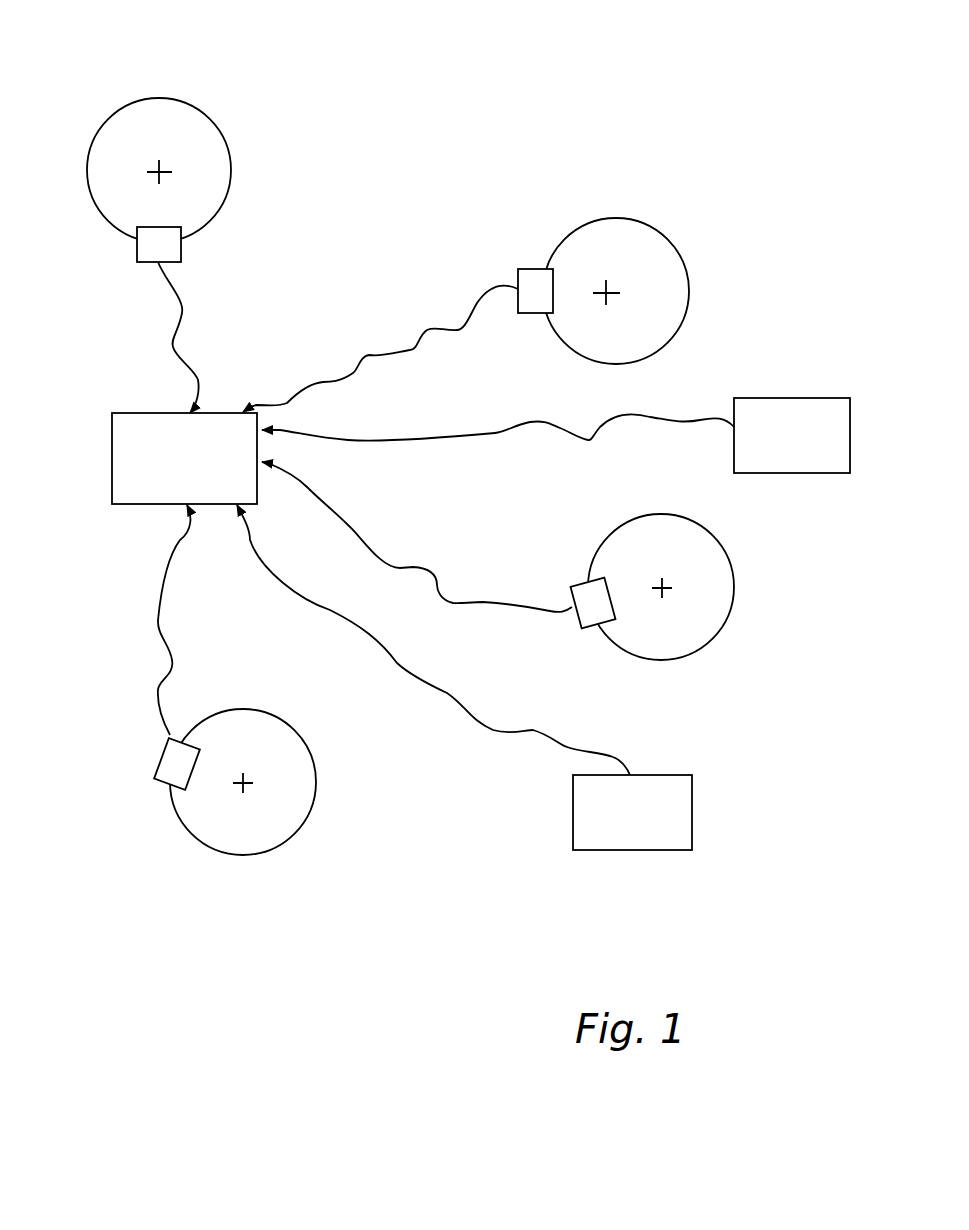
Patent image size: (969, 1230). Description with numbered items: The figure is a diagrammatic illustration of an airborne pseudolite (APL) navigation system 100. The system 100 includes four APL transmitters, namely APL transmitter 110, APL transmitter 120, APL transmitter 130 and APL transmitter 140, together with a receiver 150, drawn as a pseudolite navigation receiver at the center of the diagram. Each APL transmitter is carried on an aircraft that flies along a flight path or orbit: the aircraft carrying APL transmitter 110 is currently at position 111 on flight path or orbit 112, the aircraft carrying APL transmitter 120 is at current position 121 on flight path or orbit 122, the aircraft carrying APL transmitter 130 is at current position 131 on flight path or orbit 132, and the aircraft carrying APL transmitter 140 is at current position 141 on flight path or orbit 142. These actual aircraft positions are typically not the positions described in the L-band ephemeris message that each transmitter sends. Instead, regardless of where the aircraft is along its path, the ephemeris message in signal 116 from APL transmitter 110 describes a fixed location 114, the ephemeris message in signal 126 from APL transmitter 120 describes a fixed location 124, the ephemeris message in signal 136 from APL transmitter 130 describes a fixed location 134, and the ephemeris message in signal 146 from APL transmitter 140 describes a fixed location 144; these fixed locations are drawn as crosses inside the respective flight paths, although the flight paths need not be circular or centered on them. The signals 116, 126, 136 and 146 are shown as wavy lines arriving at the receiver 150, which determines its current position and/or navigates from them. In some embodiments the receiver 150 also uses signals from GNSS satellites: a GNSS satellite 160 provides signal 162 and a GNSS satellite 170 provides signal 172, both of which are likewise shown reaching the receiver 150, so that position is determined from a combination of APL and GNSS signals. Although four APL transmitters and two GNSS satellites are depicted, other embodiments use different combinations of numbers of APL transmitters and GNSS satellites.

The APL navigation system 100 is at (452, 90).
The APL transmitter 110 is at (182, 255).
The current position 111 is at (133, 245).
The flight path or orbit 112 is at (233, 180).
The fixed location 114 is at (159, 170).
The signal 116 is at (173, 345).
The APL transmitter 120 is at (525, 313).
The current position 121 is at (517, 278).
The flight path or orbit 122 is at (655, 225).
The fixed location 124 is at (610, 295).
The signal 126 is at (388, 355).
The APL transmitter 130 is at (587, 628).
The current position 131 is at (560, 632).
The flight path or orbit 132 is at (732, 575).
The fixed location 134 is at (663, 590).
The signal 136 is at (415, 567).
The APL transmitter 140 is at (160, 757).
The current position 141 is at (178, 735).
The flight path or orbit 142 is at (315, 763).
The fixed location 144 is at (247, 787).
The signal 146 is at (158, 620).
The receiver 150 is at (112, 475).
The GNSS satellite 160 is at (793, 398).
The signal 162 is at (532, 423).
The GNSS satellite 170 is at (692, 813).
The signal 172 is at (397, 663).